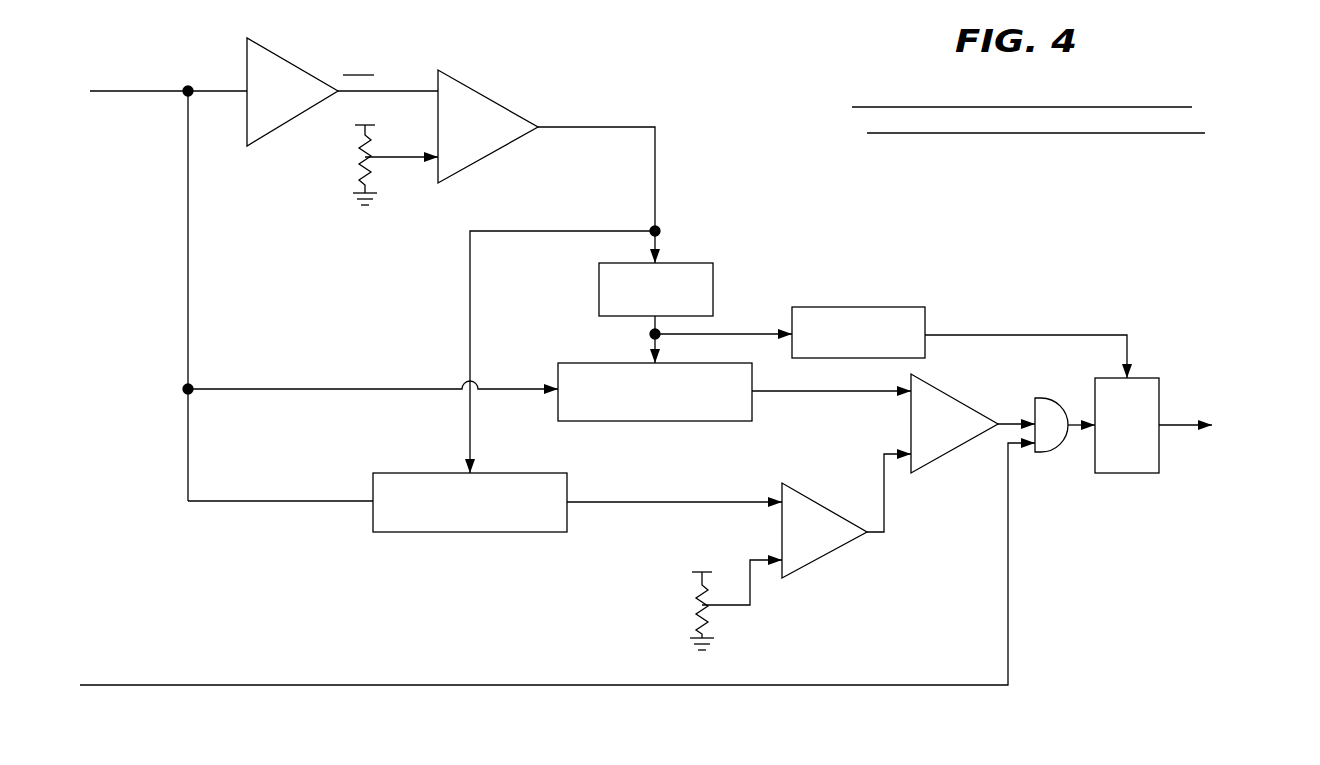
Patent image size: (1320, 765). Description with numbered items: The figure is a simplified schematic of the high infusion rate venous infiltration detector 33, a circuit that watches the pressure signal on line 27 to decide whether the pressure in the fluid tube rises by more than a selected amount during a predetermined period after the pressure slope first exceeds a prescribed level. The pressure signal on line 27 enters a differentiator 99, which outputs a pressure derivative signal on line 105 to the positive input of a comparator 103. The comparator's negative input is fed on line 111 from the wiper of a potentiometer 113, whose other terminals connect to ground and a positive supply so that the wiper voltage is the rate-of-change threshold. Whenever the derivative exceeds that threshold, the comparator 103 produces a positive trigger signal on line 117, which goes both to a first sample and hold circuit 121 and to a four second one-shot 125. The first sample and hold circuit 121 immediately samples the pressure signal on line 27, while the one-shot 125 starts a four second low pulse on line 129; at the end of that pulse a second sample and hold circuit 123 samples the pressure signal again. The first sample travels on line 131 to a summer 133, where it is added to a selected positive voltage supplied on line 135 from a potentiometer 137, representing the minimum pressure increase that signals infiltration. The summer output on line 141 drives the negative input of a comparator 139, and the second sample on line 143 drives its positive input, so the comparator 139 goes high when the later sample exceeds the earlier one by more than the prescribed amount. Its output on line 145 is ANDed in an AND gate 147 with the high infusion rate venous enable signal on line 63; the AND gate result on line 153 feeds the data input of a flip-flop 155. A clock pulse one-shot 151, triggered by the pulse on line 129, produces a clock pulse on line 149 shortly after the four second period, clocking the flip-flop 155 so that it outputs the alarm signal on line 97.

The high infusion rate venous infiltration detector 33 is at (680, 345).
The pressure signal line 27 is at (190, 252).
The differentiator 99 is at (267, 43).
The pressure derivative signal line 105 is at (393, 91).
The comparator 103 is at (485, 97).
The trigger signal line 117 is at (605, 127).
The potentiometer 113 is at (357, 162).
The threshold input line 111 is at (405, 157).
The four second one-shot 125 is at (695, 263).
The one-shot output line 129 is at (722, 334).
The second sample and hold circuit 123 is at (687, 421).
The second sample and hold output line 143 is at (823, 391).
The clock pulse one-shot 151 is at (855, 307).
The clock pulse line 149 is at (965, 335).
The comparator 139 is at (953, 455).
The comparator output line 145 is at (998, 418).
The summer output line 141 is at (884, 510).
The AND gate 147 is at (1050, 398).
The AND gate output line 153 is at (1072, 433).
The flip-flop 155 is at (1130, 378).
The alarm signal line 97 is at (1182, 425).
The first sample and hold circuit 121 is at (462, 532).
The first sample and hold output line 131 is at (618, 502).
The summer 133 is at (840, 553).
The minimum pressure increase voltage line 135 is at (747, 610).
The potentiometer 137 is at (697, 603).
The high infusion rate venous enable signal line 63 is at (533, 685).